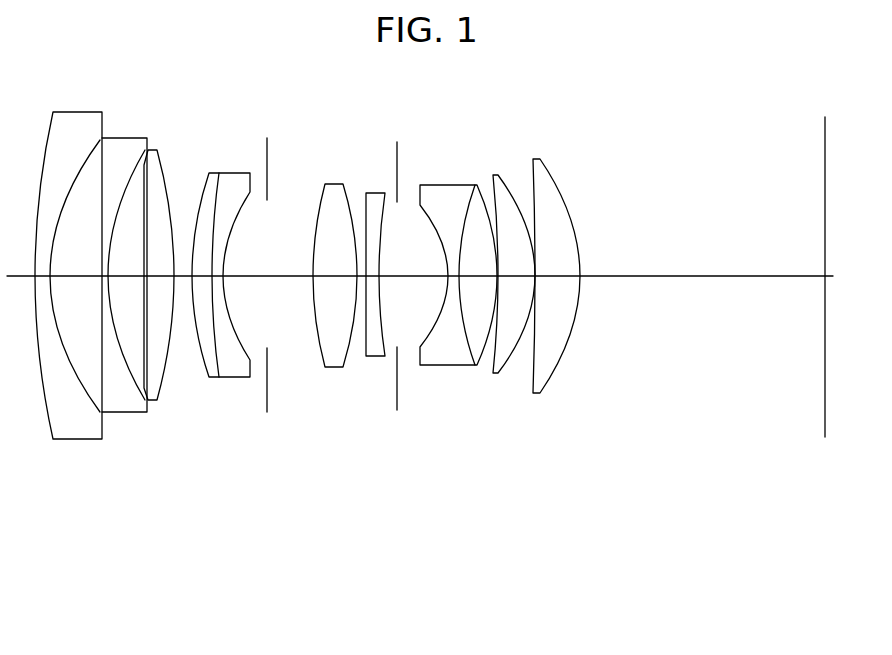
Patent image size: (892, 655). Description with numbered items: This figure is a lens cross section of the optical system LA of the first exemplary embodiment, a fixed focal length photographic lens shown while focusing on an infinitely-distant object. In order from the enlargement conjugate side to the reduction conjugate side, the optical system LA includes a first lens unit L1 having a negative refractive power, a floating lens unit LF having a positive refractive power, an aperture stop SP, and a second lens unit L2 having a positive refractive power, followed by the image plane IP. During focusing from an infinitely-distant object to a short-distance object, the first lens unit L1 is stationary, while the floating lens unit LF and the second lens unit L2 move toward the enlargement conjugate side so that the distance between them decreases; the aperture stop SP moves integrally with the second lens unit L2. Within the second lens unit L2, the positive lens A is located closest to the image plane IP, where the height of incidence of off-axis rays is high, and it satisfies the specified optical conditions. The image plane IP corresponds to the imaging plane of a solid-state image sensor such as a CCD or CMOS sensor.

The optical system LA is at (583, 95).
The first lens unit L1 is at (105, 642).
The floating lens unit LF is at (247, 650).
The second lens unit L2 is at (447, 648).
The aperture stop SP is at (396, 152).
The positive lens A is at (558, 203).
The image plane IP is at (824, 148).